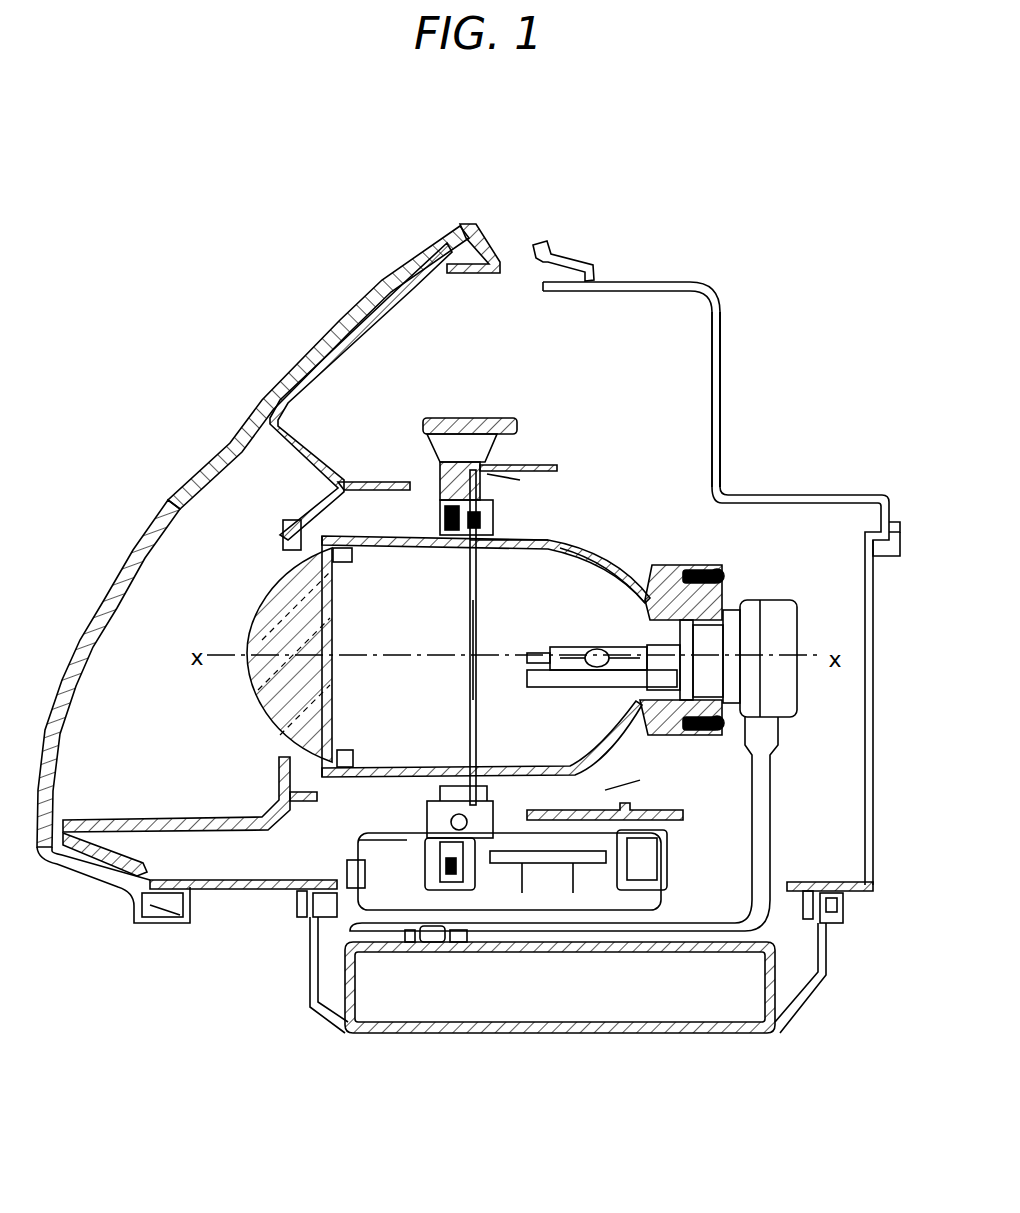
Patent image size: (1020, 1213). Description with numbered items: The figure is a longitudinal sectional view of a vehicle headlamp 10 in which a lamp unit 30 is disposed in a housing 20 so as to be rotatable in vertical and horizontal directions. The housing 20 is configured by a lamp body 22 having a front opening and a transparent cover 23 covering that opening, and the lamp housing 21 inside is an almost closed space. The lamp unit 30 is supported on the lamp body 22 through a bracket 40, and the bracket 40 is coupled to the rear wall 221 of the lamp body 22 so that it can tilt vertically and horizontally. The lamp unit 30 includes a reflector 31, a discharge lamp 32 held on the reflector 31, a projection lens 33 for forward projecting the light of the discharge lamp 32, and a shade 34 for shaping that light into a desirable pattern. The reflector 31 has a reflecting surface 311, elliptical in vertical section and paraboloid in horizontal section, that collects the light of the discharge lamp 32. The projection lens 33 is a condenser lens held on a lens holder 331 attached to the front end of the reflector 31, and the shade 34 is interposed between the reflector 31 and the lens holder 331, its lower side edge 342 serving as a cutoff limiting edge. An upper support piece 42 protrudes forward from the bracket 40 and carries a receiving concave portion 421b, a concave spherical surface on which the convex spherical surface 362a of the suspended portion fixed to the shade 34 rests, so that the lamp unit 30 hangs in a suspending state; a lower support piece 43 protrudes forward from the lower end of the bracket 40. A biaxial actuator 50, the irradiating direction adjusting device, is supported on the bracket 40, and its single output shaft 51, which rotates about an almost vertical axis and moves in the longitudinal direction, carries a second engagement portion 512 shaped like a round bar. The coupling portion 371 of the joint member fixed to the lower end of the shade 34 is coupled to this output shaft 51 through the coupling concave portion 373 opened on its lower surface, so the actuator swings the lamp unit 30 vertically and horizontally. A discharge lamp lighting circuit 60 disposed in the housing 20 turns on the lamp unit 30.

The headlamp 10 is at (322, 226).
The housing 20 is at (492, 240).
The lamp housing 21 is at (623, 327).
The lamp body 22 is at (722, 342).
The rear wall 221 is at (722, 384).
The transparent cover 23 is at (213, 453).
The lamp unit 30 is at (585, 545).
The reflector 31 is at (548, 543).
The reflecting surface 311 is at (597, 565).
The discharge lamp 32 is at (573, 645).
The projection lens 33 is at (263, 607).
The lens holder 331 is at (388, 535).
The shade 34 is at (470, 582).
The lower side edge 342 is at (468, 647).
The convex spherical surface 362a is at (440, 427).
The coupling portion 371 is at (430, 832).
The coupling concave portion 373 is at (490, 820).
The bracket 40 is at (547, 460).
The upper support piece 42 is at (528, 462).
The receiving concave portion 421b is at (467, 440).
The lower support piece 43 is at (605, 807).
The biaxial actuator 50 is at (668, 840).
The output shaft 51 is at (423, 840).
The second engagement portion 512 is at (462, 832).
The discharge lamp lighting circuit 60 is at (583, 990).